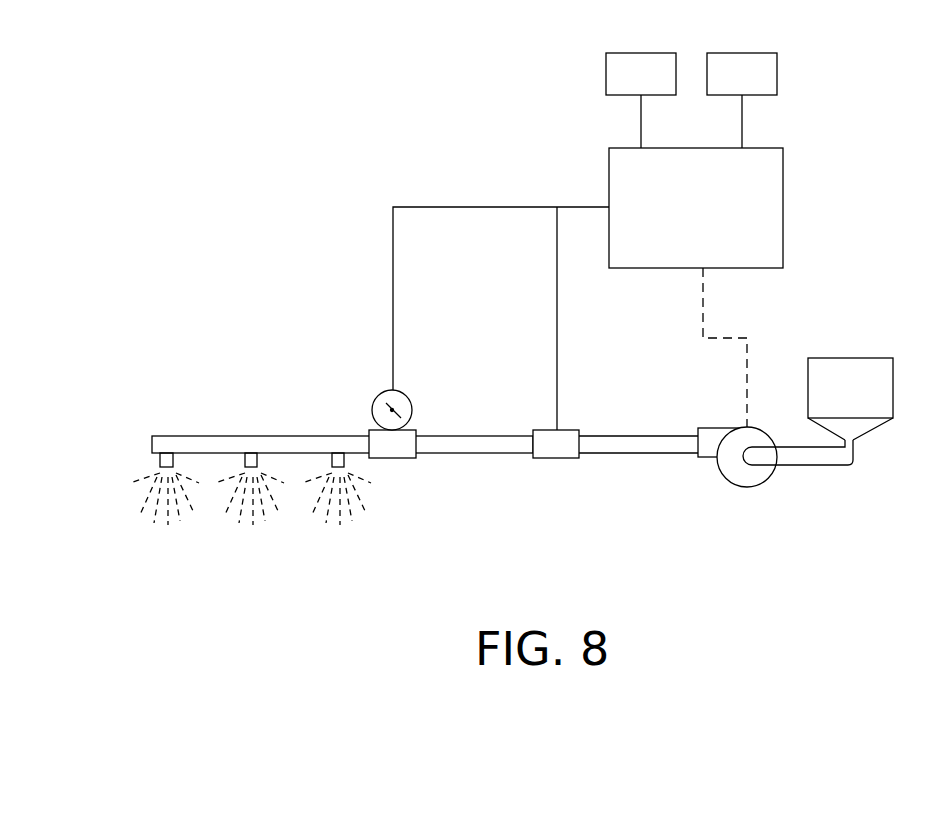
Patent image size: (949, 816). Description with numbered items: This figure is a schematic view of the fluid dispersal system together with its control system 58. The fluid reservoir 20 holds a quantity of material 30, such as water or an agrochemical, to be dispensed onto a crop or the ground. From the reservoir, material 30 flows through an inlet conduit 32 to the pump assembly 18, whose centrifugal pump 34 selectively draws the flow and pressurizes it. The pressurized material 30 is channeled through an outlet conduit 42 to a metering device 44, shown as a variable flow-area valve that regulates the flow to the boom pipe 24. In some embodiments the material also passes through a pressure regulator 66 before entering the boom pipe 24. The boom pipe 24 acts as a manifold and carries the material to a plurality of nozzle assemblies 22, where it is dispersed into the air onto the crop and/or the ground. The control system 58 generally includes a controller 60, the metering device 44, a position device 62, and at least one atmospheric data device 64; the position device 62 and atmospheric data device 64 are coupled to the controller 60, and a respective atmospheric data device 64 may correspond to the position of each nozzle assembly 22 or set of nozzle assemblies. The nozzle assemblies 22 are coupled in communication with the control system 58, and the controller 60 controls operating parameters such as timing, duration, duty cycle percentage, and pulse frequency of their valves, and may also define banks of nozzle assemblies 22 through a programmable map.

The pump assembly 18 is at (788, 501).
The fluid reservoir 20 is at (831, 400).
The nozzle assemblies 22 is at (160, 456).
The boom pipe 24 is at (443, 435).
The material 30 is at (150, 487).
The inlet conduit 32 is at (833, 465).
The centrifugal pump 34 is at (752, 487).
The outlet conduit 42 is at (633, 453).
The metering device 44 is at (562, 458).
The control system 58 is at (664, 241).
The controller 60 is at (678, 222).
The position device 62 is at (624, 88).
The atmospheric data device 64 is at (725, 88).
The pressure regulator 66 is at (386, 393).